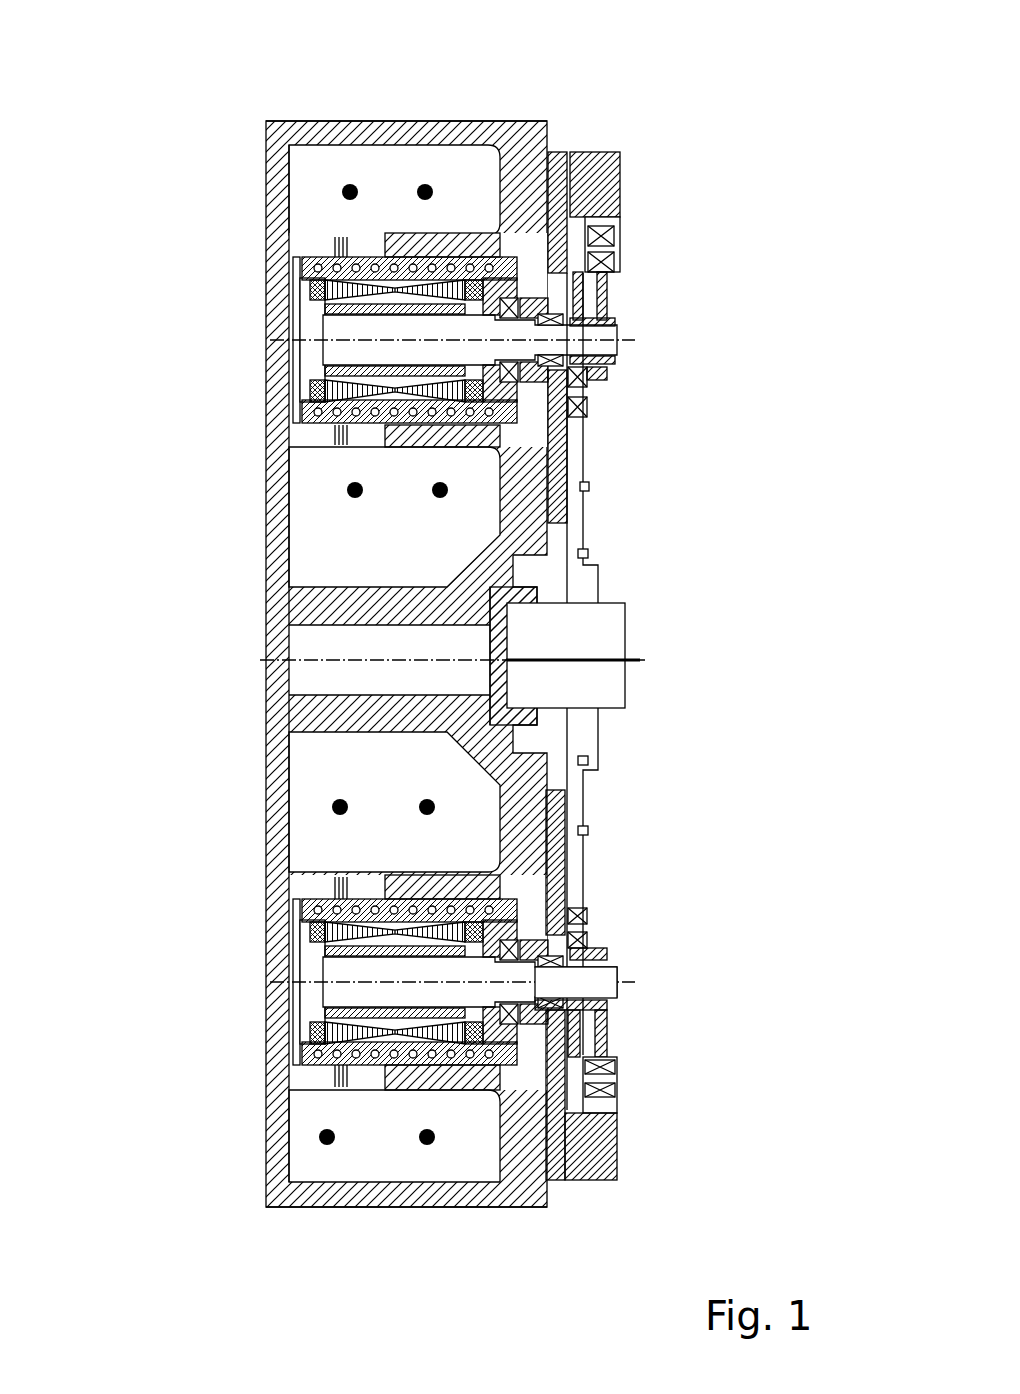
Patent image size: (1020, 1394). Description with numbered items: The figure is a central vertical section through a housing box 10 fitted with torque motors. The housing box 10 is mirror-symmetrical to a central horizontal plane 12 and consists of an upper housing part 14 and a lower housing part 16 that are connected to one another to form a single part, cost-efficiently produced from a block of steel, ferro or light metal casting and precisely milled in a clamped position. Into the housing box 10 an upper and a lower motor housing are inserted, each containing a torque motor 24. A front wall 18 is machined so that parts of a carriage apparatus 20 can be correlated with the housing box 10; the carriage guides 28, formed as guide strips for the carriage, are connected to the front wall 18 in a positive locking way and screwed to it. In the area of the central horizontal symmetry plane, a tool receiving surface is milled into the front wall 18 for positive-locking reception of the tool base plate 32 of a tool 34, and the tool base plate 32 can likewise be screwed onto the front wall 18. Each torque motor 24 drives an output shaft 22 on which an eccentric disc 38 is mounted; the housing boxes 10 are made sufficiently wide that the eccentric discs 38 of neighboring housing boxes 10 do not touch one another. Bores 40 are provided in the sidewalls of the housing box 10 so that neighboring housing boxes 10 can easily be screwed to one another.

The housing box 10 is at (466, 108).
The central horizontal plane 12 is at (320, 655).
The upper housing part 14 is at (390, 127).
The lower housing part 16 is at (362, 1203).
The front wall 18 is at (510, 470).
The carriage apparatus 20 is at (560, 848).
The output shaft 22 is at (614, 966).
The torque motor 24 is at (497, 267).
The carriage guides 28 is at (560, 170).
The tool base plate 32 is at (540, 590).
The tool 34 is at (590, 640).
The eccentric disc 38 is at (582, 1028).
The bores 40 is at (433, 487).